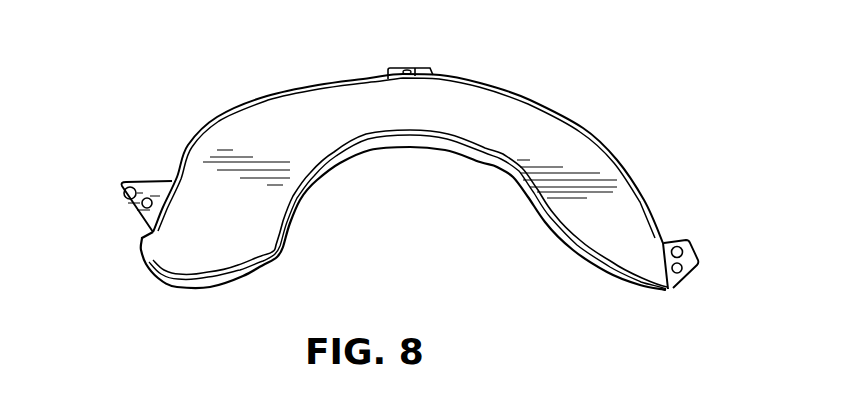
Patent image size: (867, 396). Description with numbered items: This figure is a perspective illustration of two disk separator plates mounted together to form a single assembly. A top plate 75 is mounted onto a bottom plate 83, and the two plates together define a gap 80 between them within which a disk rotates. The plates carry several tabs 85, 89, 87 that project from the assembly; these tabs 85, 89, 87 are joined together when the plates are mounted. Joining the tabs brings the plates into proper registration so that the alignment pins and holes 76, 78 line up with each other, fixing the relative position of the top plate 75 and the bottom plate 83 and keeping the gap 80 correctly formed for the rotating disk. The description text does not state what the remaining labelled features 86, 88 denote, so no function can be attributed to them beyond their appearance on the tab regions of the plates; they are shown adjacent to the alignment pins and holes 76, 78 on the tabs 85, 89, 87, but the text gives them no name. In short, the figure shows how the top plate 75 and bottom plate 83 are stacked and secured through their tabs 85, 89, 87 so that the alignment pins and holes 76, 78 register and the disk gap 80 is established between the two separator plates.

The top plate 75 is at (553, 111).
The alignment pins and holes 76 is at (681, 273).
The alignment pins and holes 78 is at (126, 198).
The gap 80 is at (596, 256).
The bottom plate 83 is at (619, 274).
The tab 85 is at (694, 252).
The mounting aperture 86 is at (148, 197).
The tab 87 is at (122, 188).
The mounting aperture 88 is at (679, 246).
The tab 89 is at (423, 74).